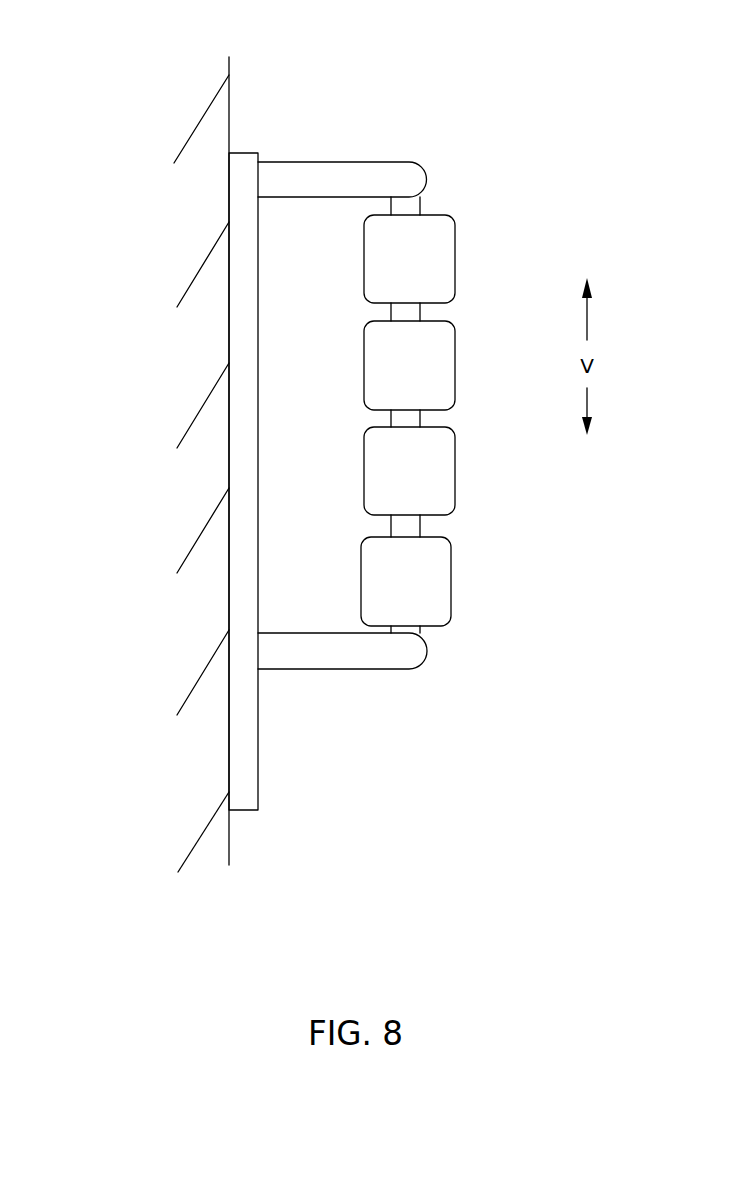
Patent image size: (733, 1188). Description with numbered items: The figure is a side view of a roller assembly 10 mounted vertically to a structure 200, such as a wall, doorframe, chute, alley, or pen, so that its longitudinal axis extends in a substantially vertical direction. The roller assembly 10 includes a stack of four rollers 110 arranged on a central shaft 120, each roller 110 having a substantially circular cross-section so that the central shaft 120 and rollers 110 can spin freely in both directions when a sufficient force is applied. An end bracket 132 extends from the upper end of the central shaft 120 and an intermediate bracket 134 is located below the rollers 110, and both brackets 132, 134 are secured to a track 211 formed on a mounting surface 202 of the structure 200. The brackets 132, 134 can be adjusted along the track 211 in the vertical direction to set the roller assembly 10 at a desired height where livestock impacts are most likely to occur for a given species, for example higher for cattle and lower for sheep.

The structure 200 is at (128, 70).
The mounting surface 202 is at (229, 108).
The track 211 is at (238, 813).
The roller assembly 10 is at (485, 722).
The end bracket 132 is at (377, 172).
The intermediate bracket 134 is at (326, 660).
The central shaft 120 is at (421, 208).
The roller 110 is at (450, 267).